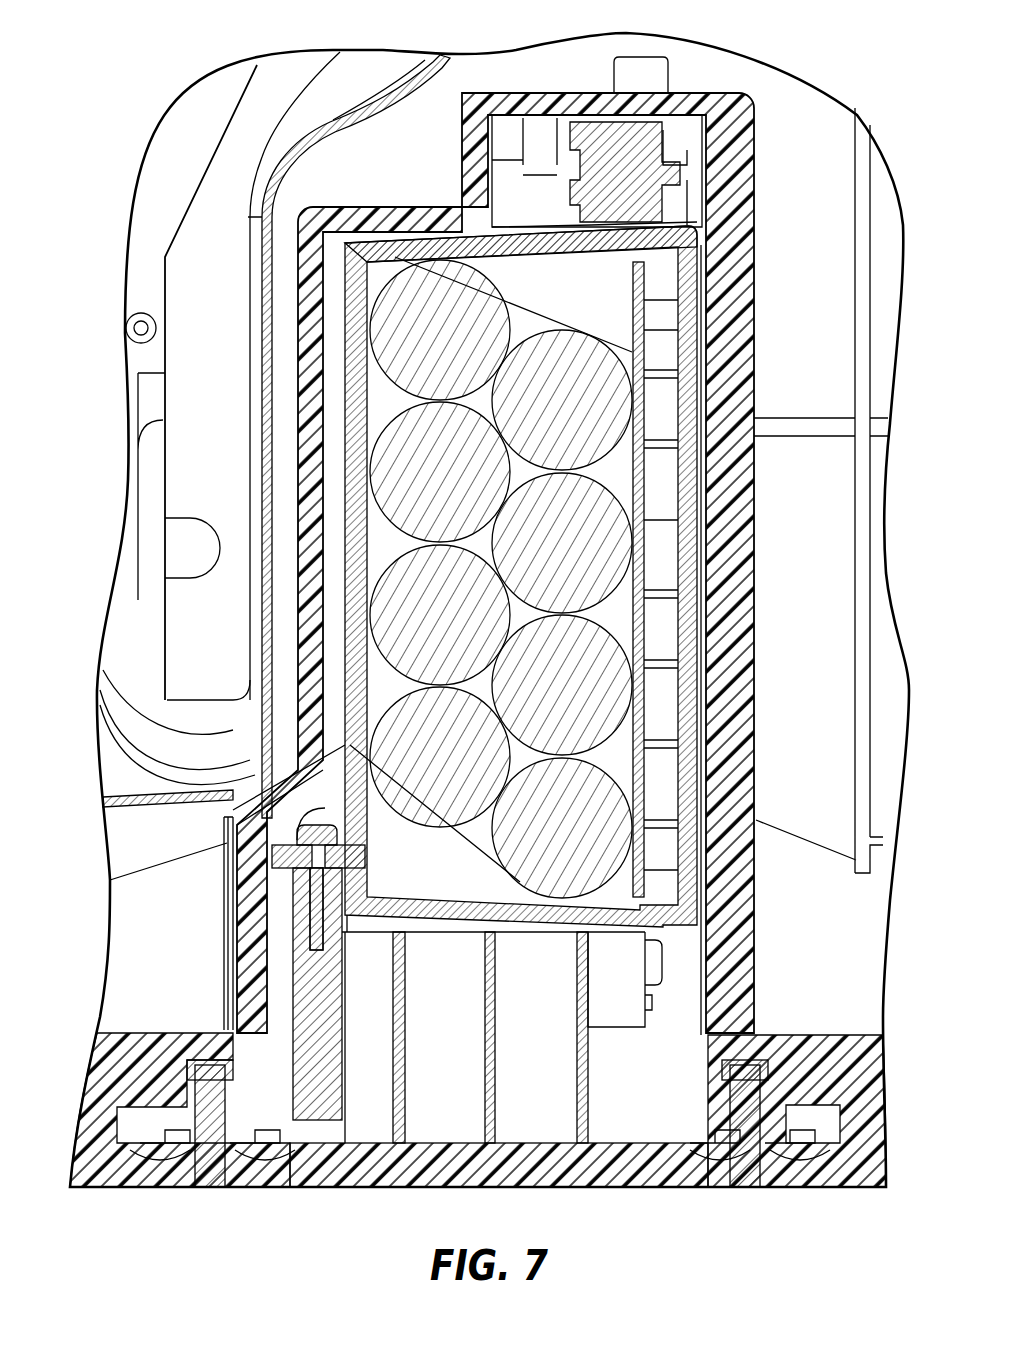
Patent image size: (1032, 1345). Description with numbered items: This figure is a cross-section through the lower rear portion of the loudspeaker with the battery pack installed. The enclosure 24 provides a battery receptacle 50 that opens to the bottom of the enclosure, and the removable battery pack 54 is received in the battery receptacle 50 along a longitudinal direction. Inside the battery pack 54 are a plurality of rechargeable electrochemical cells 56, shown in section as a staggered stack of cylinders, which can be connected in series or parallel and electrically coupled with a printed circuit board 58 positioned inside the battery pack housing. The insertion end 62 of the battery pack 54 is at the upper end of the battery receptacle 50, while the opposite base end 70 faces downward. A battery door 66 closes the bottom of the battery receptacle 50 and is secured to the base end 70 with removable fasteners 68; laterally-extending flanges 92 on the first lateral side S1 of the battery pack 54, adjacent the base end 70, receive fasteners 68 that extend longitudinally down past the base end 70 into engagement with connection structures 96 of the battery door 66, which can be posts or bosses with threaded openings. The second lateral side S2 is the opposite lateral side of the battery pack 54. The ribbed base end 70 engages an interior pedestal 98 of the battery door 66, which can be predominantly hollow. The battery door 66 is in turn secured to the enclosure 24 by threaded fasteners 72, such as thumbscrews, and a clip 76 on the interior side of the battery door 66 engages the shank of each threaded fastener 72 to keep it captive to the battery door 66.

The enclosure 24 is at (107, 1073).
The battery receptacle 50 is at (694, 206).
The removable battery pack 54 is at (688, 322).
The electrochemical cells 56 is at (427, 342).
The printed circuit board 58 is at (640, 502).
The insertion end 62 is at (473, 233).
The battery door 66 is at (392, 1170).
The removable fasteners 68 is at (300, 890).
The base end 70 is at (457, 912).
The threaded fasteners 72 is at (213, 1157).
The clip 76 is at (180, 1132).
The laterally-extending flanges 92 is at (273, 851).
The connection structures 96 is at (300, 938).
The interior pedestal 98 is at (497, 1063).
The first lateral side S1 is at (347, 783).
The second lateral side S2 is at (706, 675).